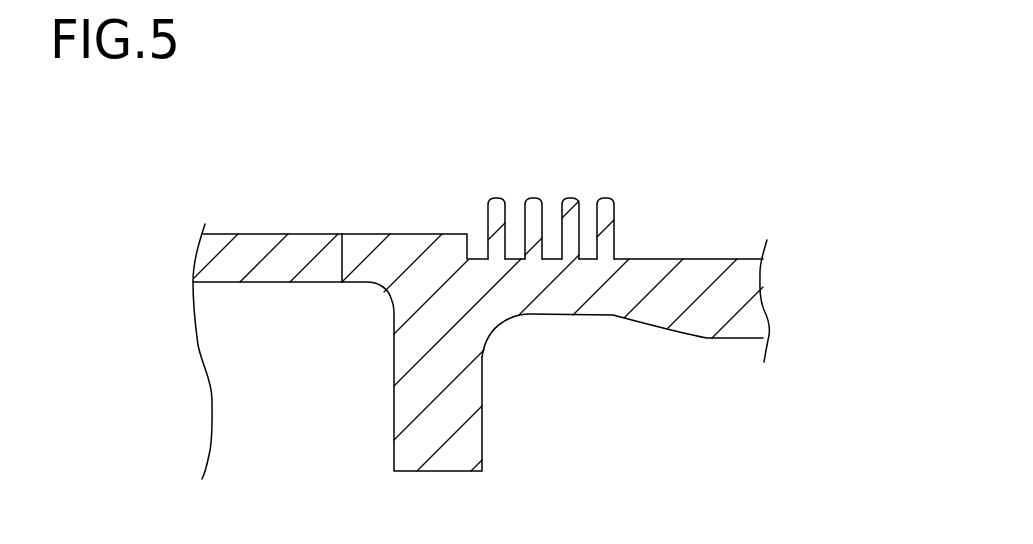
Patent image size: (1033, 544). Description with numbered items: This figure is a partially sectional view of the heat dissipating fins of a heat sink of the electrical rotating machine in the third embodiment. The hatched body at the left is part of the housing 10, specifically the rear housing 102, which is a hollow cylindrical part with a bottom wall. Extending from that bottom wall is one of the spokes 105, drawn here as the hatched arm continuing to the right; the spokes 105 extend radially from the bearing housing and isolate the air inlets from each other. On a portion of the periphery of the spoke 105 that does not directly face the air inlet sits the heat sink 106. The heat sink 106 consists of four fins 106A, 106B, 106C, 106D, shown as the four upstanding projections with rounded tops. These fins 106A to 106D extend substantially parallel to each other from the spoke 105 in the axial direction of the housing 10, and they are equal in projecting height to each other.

The housing 10 is at (357, 297).
The rear housing 102 is at (392, 273).
The spoke 105 is at (598, 282).
The heat sink 106 is at (687, 91).
The fin 106A is at (493, 197).
The fin 106B is at (533, 197).
The fin 106C is at (572, 197).
The fin 106D is at (607, 197).